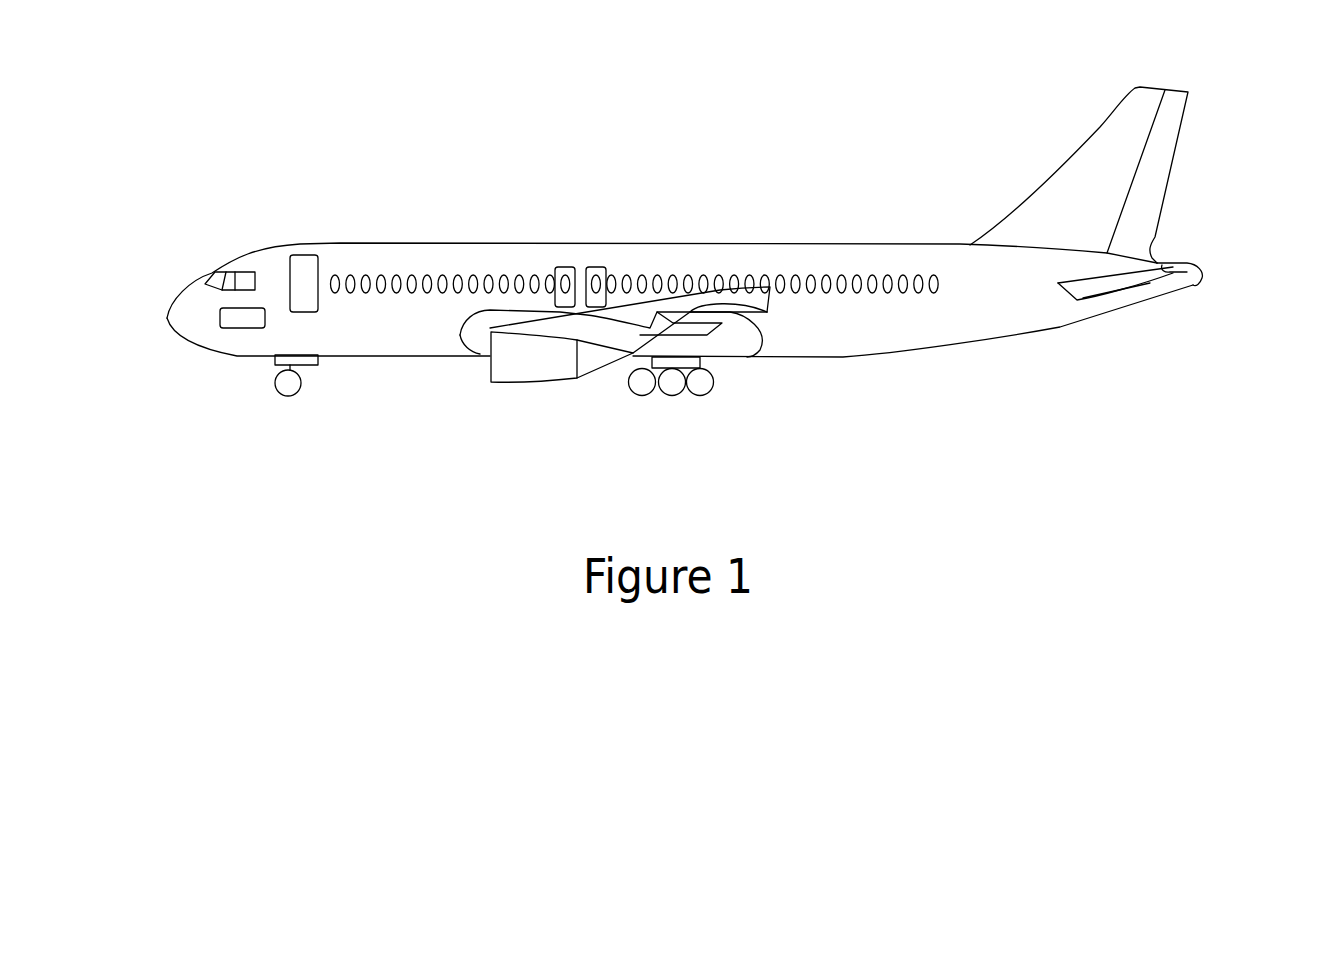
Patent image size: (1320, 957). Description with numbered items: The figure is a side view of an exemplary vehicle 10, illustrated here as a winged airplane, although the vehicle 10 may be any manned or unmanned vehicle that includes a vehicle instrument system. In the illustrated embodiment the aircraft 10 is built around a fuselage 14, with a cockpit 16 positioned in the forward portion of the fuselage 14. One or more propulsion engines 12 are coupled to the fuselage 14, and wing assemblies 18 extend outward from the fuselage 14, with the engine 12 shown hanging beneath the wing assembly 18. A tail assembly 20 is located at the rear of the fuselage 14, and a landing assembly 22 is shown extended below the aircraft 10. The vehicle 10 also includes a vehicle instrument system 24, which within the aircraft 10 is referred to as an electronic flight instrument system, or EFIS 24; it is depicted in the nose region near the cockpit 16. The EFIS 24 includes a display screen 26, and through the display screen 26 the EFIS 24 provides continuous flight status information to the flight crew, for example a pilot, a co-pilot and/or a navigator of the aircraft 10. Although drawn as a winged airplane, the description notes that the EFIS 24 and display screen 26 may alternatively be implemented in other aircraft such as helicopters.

The vehicle 10 is at (453, 155).
The propulsion engine 12 is at (523, 368).
The fuselage 14 is at (437, 240).
The cockpit 16 is at (267, 267).
The wing assembly 18 is at (628, 317).
The tail assembly 20 is at (1117, 145).
The landing assembly 22 is at (706, 392).
The vehicle instrument system 24 is at (191, 351).
The display screen 26 is at (237, 325).